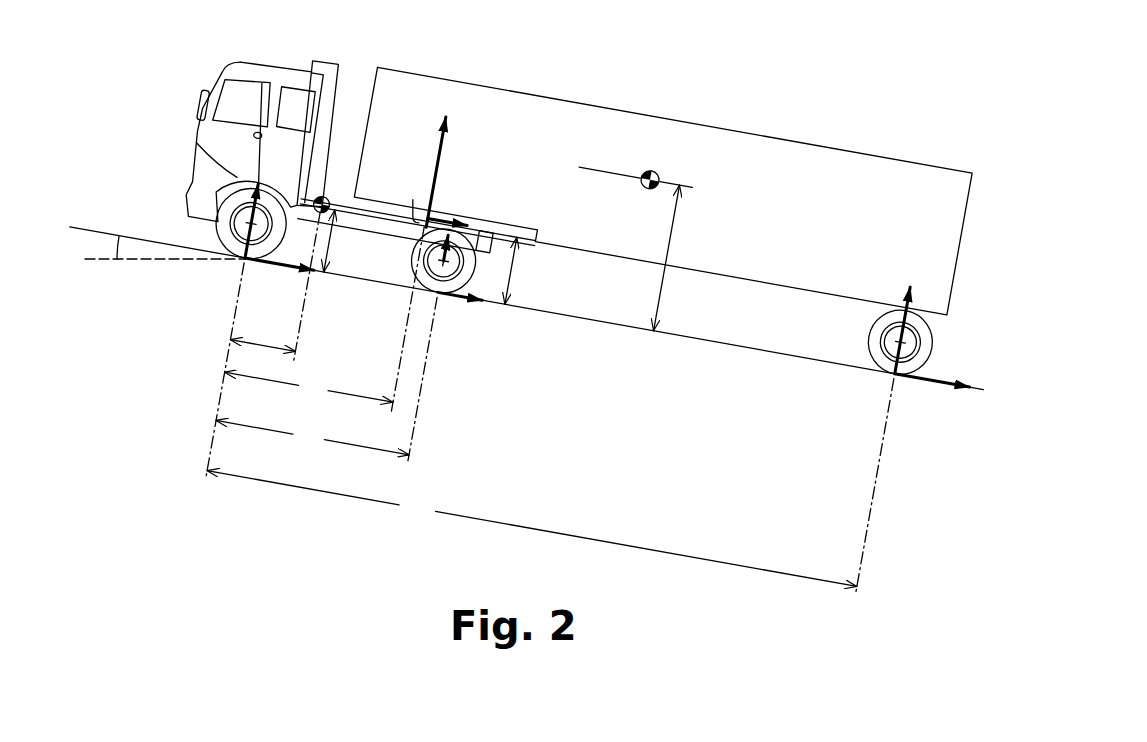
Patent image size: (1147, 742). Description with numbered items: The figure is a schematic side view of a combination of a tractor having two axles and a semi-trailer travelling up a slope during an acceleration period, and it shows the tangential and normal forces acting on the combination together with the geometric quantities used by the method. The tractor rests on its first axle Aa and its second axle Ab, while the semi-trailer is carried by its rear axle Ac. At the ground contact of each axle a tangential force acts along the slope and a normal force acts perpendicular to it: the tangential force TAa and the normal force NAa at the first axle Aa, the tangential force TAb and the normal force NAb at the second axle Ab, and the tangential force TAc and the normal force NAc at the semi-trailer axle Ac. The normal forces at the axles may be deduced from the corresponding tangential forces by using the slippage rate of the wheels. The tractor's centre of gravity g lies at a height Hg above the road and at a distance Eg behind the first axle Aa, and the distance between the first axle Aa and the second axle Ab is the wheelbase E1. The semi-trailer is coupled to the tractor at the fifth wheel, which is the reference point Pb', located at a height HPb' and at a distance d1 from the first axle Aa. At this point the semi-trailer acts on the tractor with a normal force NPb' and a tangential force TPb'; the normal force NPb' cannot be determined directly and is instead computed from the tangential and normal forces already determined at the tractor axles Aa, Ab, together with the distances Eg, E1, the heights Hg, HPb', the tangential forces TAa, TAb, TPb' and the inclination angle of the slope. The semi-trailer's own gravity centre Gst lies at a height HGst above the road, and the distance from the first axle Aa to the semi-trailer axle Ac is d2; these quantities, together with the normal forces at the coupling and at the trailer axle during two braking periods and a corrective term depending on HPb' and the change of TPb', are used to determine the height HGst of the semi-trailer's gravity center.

The first axle Aa is at (233, 222).
The second axle Ab is at (432, 284).
The trailer axle / trailer wheel Ac is at (882, 343).
The center of gravity of the tractor g is at (325, 191).
The reference point Pb' is at (412, 198).
The centre of gravity of trailer Gst is at (636, 169).
The normal force at the first axle NAa is at (254, 188).
The tangential force at the first axle TAa is at (246, 281).
The normal force at the reference point Pb' NPb' is at (447, 159).
The tangential force at the reference point Pb' TPb' is at (454, 207).
The normal force at the second axle NAb is at (446, 258).
The tangential force at the second axle TAb is at (460, 312).
The normal force on trailer axle NAc is at (887, 316).
The tangential force on trailer axle TAc is at (932, 398).
The height of the gravity center of the tractor Hg is at (340, 241).
The height of the reference point Pb' HPb' is at (532, 270).
The height of the gravity center of the semi-trailer HGst is at (683, 258).
The distance between the gravity center g and the first axle Aa Eg is at (262, 332).
The distance between the first axle Aa and the reference point Pb' d1 is at (309, 387).
The distance between the first axle Aa and the second axle Ab E1 is at (312, 437).
The distance between the first axle Aa and the reference point Pc' d2 is at (532, 529).